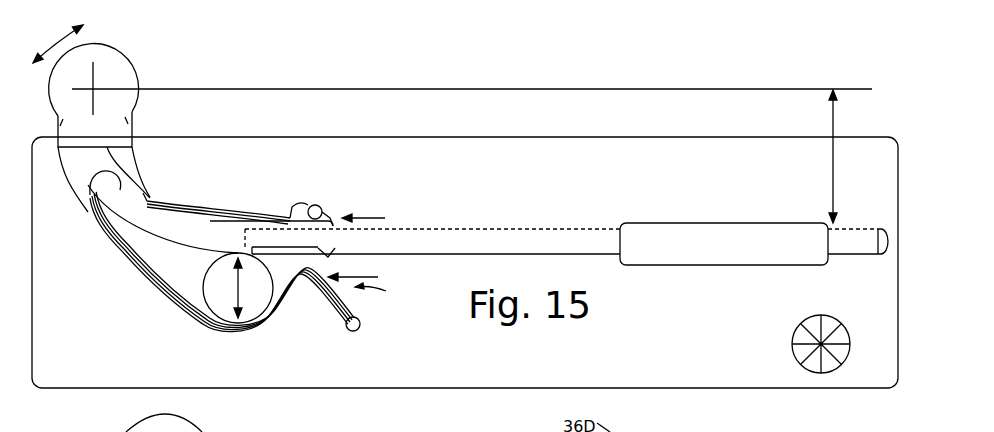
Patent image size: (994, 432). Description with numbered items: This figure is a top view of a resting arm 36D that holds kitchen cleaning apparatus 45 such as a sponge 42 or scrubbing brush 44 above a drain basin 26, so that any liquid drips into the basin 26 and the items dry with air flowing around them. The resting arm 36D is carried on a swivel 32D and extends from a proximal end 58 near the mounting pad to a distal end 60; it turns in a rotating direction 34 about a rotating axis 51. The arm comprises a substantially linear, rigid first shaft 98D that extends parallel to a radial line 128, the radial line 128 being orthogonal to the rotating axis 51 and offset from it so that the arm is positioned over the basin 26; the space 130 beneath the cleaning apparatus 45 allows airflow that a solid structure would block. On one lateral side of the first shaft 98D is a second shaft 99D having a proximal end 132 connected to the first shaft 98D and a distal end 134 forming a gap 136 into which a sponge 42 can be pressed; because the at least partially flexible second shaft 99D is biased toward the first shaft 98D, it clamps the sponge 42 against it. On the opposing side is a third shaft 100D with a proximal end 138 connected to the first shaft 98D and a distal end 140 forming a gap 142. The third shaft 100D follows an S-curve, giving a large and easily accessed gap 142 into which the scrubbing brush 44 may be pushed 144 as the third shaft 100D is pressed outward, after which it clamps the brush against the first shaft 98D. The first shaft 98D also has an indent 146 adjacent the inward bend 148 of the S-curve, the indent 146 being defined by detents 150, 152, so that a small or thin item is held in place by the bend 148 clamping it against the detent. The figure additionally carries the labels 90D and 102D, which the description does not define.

The drain basin 26 is at (303, 390).
The radial line 128 is at (616, 89).
The space 130 is at (836, 128).
The swivel 32D is at (138, 108).
The rotating axis 51 is at (95, 88).
The rotating direction 34 is at (45, 41).
The proximal end 58 is at (135, 158).
The proximal end of second shaft 132 is at (167, 197).
The second shaft 99D is at (248, 208).
The distal end of second shaft 134 is at (297, 210).
The sponge 42 is at (325, 207).
The gap 136 is at (345, 208).
The first shaft 98D is at (568, 230).
The resting arm 36D is at (603, 230).
The indent 146 is at (313, 248).
The detent 152 is at (330, 256).
The push direction 144 is at (378, 277).
The gap 142 is at (387, 291).
The cleaning apparatus 45 is at (705, 266).
The shaft tip 90D is at (850, 229).
The distal end 60 is at (877, 226).
The third shaft 100D is at (247, 331).
The roller diameter 102D is at (233, 283).
The scrubbing brush 44 is at (213, 311).
The proximal end of third shaft 138 is at (80, 192).
The inward bend 148 is at (318, 302).
The detent 150 is at (284, 258).
The distal end of third shaft 140 is at (359, 328).